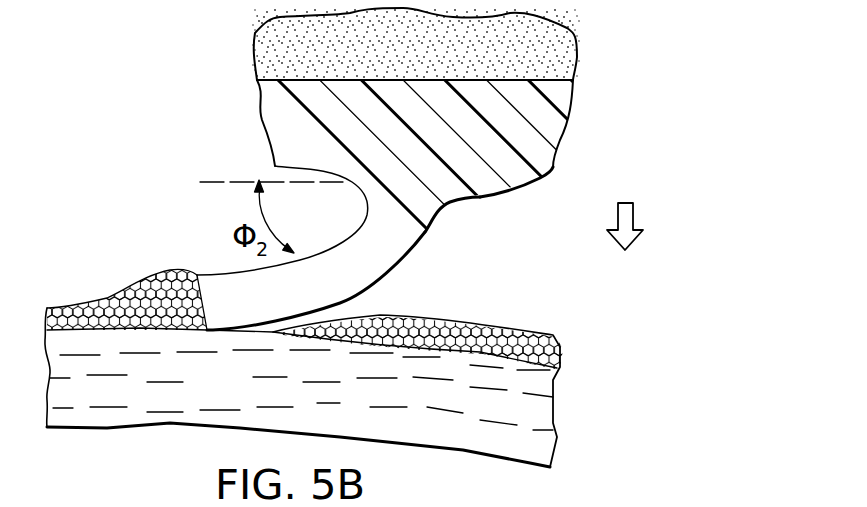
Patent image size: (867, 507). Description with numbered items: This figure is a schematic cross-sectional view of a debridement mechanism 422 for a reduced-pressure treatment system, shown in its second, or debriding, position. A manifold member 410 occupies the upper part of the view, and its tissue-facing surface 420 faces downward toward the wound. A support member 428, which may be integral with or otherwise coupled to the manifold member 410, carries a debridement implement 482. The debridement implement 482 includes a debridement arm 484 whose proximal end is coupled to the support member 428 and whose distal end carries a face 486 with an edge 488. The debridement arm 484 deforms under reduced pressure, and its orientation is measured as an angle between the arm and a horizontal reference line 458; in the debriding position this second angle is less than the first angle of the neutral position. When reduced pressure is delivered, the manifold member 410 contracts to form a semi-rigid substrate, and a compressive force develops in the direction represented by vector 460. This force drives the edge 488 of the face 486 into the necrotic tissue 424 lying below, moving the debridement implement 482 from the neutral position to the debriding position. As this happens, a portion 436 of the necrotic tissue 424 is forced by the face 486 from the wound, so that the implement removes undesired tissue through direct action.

The manifold member 410 is at (440, 61).
The tissue-facing surface 420 is at (563, 92).
The debridement mechanism 422 is at (438, 252).
The necrotic tissue 424 is at (517, 340).
The support member 428 is at (268, 93).
The portion of necrotic tissue 436 is at (154, 280).
The horizontal reference line 458 is at (210, 181).
The vector 460 is at (634, 213).
The debridement implement 482 is at (427, 238).
The debridement arm 484 is at (393, 267).
The face 486 is at (187, 300).
The edge 488 is at (200, 335).